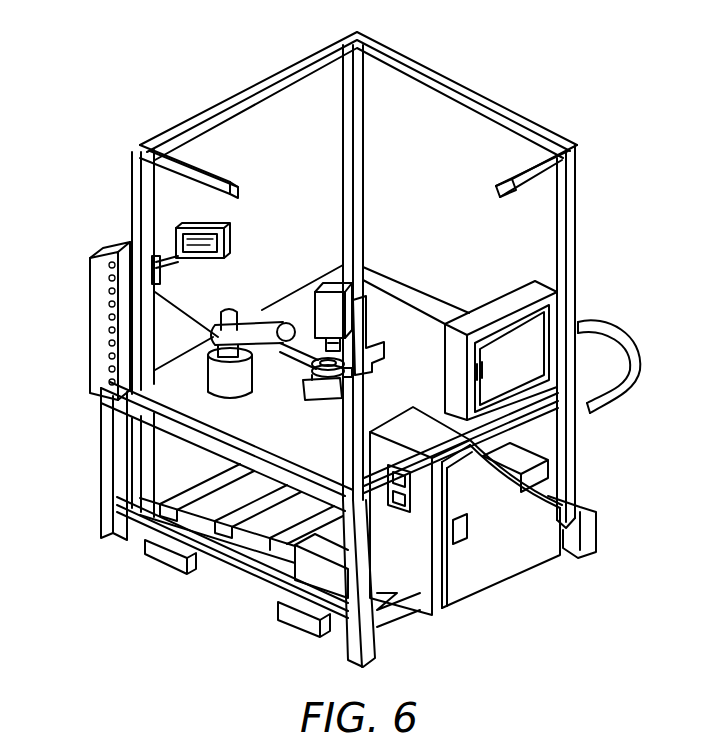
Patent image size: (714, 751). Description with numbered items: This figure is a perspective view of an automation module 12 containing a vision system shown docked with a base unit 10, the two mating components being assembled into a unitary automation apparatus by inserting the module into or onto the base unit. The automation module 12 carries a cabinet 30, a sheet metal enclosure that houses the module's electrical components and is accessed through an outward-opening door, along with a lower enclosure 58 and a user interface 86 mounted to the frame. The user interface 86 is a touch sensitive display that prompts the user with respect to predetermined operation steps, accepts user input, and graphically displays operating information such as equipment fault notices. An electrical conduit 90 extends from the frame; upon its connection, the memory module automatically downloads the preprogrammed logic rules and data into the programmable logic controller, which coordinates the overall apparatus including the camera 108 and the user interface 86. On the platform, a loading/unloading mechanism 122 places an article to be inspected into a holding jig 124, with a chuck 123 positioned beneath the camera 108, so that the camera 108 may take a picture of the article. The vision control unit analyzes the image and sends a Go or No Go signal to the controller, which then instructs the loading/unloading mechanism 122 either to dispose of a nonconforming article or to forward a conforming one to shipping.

The base unit 10 is at (99, 418).
The automation module 12 is at (488, 92).
The cabinet 30 is at (518, 301).
The lower cabinet 58 is at (479, 582).
The user interface 86 is at (201, 259).
The electrical conduit 90 is at (627, 334).
The camera 108 is at (329, 282).
The loading/unloading mechanism 122 is at (246, 328).
The chuck 123 is at (318, 396).
The holding jig 124 is at (298, 378).